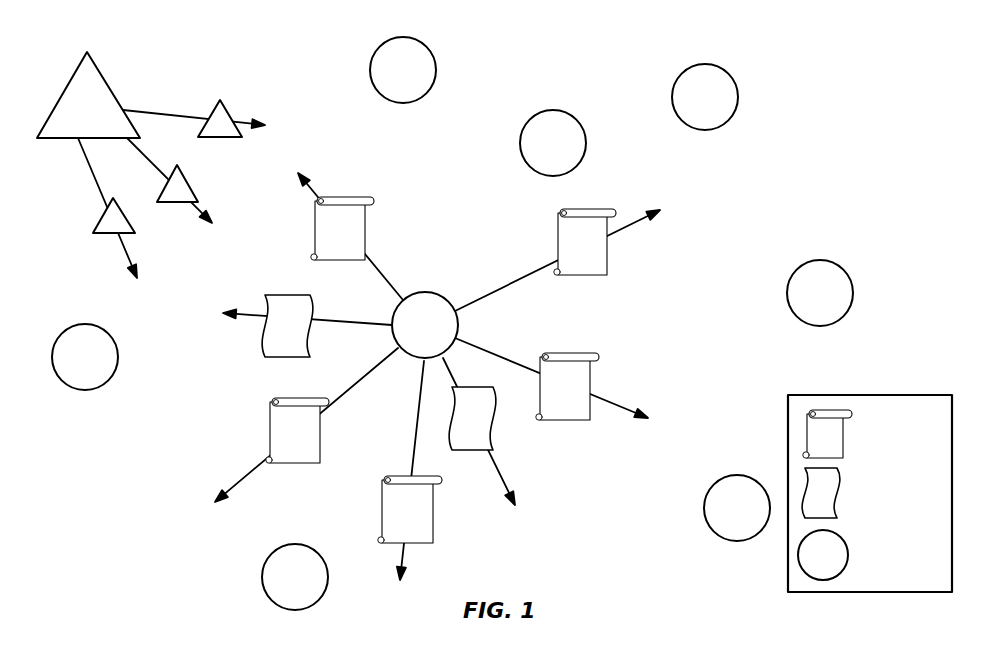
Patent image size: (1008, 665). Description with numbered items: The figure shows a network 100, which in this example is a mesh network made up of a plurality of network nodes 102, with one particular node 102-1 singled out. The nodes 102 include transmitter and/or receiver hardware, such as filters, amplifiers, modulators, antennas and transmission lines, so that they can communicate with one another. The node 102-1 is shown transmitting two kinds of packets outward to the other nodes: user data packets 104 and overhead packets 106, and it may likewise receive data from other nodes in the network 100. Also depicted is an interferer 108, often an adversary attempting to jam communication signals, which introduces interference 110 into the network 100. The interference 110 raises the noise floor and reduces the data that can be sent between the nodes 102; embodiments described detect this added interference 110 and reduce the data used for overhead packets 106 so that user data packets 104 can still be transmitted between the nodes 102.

The network 100 is at (810, 74).
The network nodes 102 is at (849, 555).
The node 102-1 is at (441, 293).
The user data packets 104 is at (866, 433).
The overhead packets 106 is at (865, 494).
The interferer 108 is at (103, 73).
The interference 110 is at (249, 83).